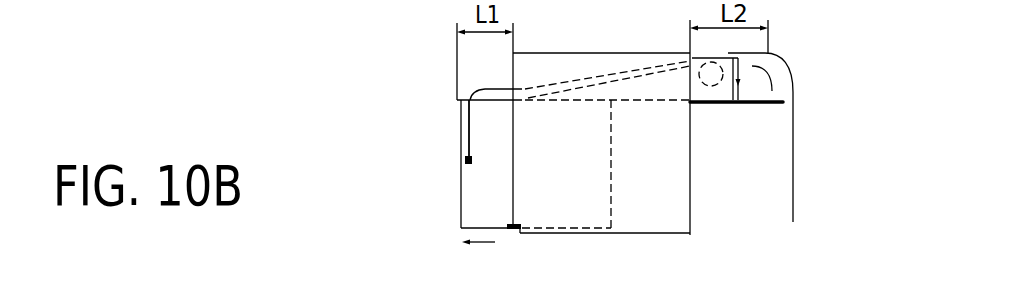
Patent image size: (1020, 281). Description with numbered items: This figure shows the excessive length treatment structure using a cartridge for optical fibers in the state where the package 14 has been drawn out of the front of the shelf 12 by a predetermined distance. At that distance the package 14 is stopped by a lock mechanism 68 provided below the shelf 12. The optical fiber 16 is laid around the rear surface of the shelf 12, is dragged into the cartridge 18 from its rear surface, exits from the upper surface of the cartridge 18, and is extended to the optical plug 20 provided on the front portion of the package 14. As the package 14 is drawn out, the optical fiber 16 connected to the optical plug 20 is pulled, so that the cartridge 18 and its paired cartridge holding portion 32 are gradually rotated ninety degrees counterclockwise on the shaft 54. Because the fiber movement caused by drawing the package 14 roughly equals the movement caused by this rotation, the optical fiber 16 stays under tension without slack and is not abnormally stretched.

The shelf 12 is at (537, 200).
The package 14 is at (470, 180).
The optical fiber 16 is at (795, 208).
The cartridge 18 is at (702, 105).
The optical plug 20 is at (466, 160).
The cartridge holding portion 32 is at (738, 63).
The shaft 54 is at (729, 105).
The lock mechanism 68 is at (512, 230).